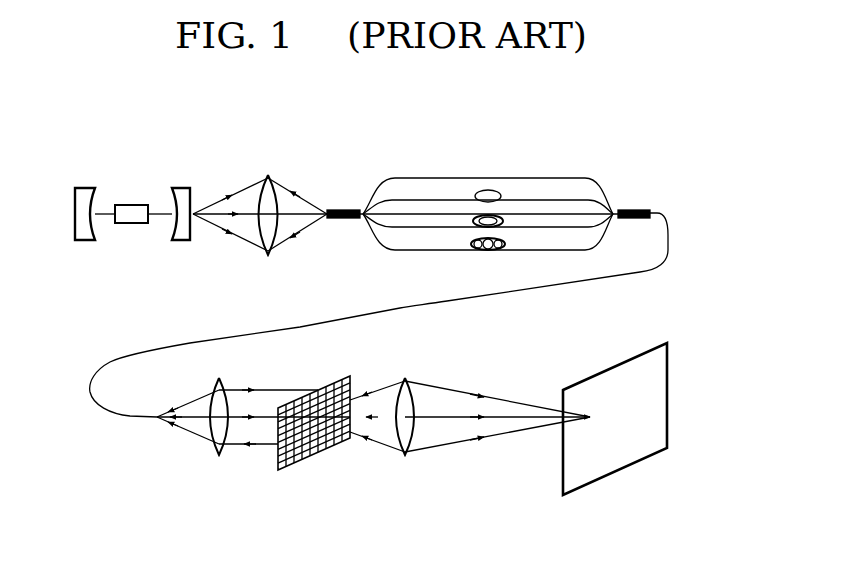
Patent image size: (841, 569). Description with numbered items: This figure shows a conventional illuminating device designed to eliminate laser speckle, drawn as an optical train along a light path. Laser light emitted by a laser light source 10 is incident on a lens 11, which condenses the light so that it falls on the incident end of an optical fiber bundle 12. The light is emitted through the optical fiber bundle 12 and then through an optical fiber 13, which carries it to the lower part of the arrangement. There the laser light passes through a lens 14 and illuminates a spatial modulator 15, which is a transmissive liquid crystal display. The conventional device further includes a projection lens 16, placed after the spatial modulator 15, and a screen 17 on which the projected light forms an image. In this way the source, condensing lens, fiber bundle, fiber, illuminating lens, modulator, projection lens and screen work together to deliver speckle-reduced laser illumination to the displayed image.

The laser light source 10 is at (139, 192).
The lens 11 is at (270, 174).
The optical fiber bundle 12 is at (610, 168).
The optical fiber 13 is at (448, 302).
The lens 14 is at (219, 456).
The spatial modulator 15 is at (305, 457).
The projection lens 16 is at (405, 456).
The screen 17 is at (614, 472).